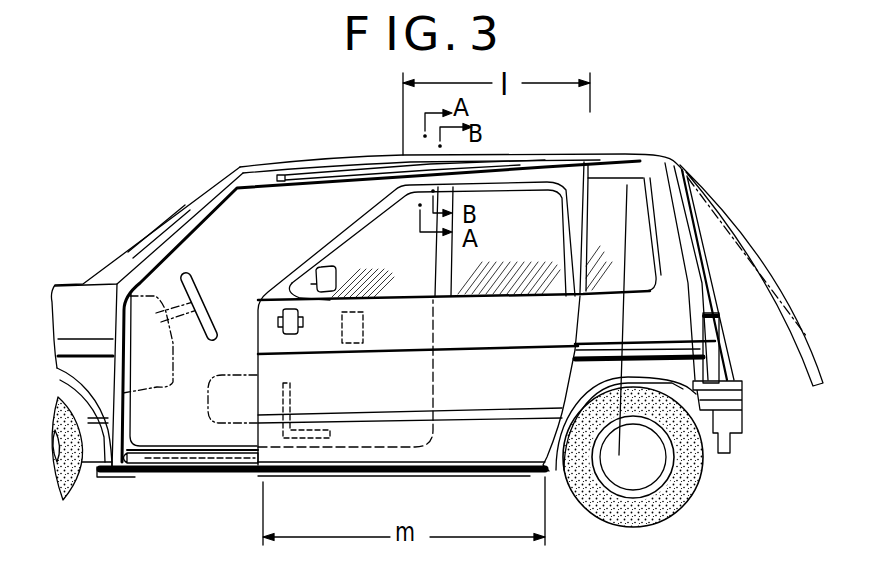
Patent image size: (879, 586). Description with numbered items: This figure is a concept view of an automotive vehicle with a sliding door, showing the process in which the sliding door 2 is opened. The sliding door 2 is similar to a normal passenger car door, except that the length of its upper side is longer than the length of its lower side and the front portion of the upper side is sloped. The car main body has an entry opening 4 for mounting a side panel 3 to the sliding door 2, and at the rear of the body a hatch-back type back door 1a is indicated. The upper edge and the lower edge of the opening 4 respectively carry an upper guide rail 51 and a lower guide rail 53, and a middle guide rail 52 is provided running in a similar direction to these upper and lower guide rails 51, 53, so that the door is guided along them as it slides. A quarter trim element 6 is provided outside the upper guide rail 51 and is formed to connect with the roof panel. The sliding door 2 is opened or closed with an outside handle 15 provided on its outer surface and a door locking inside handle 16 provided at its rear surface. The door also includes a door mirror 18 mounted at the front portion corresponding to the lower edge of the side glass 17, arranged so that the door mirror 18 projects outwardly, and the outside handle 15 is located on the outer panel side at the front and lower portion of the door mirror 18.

The hatch-back type back door 1a is at (757, 258).
The sliding door 2 is at (497, 458).
The side panel 3 is at (692, 297).
The entry opening 4 is at (170, 432).
The upper guide rail 51 is at (312, 177).
The middle guide rail 52 is at (693, 340).
The lower guide rail 53 is at (208, 468).
The quarter trim element 6 is at (615, 172).
The outside handle 15 is at (283, 311).
The door locking inside handle 16 is at (364, 333).
The side glass 17 is at (164, 386).
The door mirror 18 is at (291, 405).